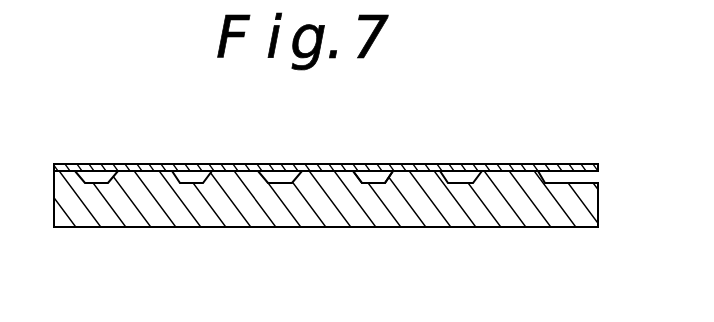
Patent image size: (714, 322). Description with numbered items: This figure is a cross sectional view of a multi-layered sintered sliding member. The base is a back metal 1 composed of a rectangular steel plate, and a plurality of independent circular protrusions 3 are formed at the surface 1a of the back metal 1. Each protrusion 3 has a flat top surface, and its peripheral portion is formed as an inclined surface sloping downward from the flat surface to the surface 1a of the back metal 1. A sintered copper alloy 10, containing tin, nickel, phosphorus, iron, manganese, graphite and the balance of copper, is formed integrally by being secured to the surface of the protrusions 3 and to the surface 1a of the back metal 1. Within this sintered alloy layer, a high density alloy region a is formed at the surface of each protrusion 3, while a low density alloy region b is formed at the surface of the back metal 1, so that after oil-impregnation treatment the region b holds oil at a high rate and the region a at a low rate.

The back metal 1 is at (457, 242).
The surface of the back metal 1a is at (331, 142).
The circular protrusion 3 is at (505, 166).
The sintered copper alloy 10 is at (288, 164).
The high density alloy region a is at (417, 170).
The low density alloy region b is at (369, 171).